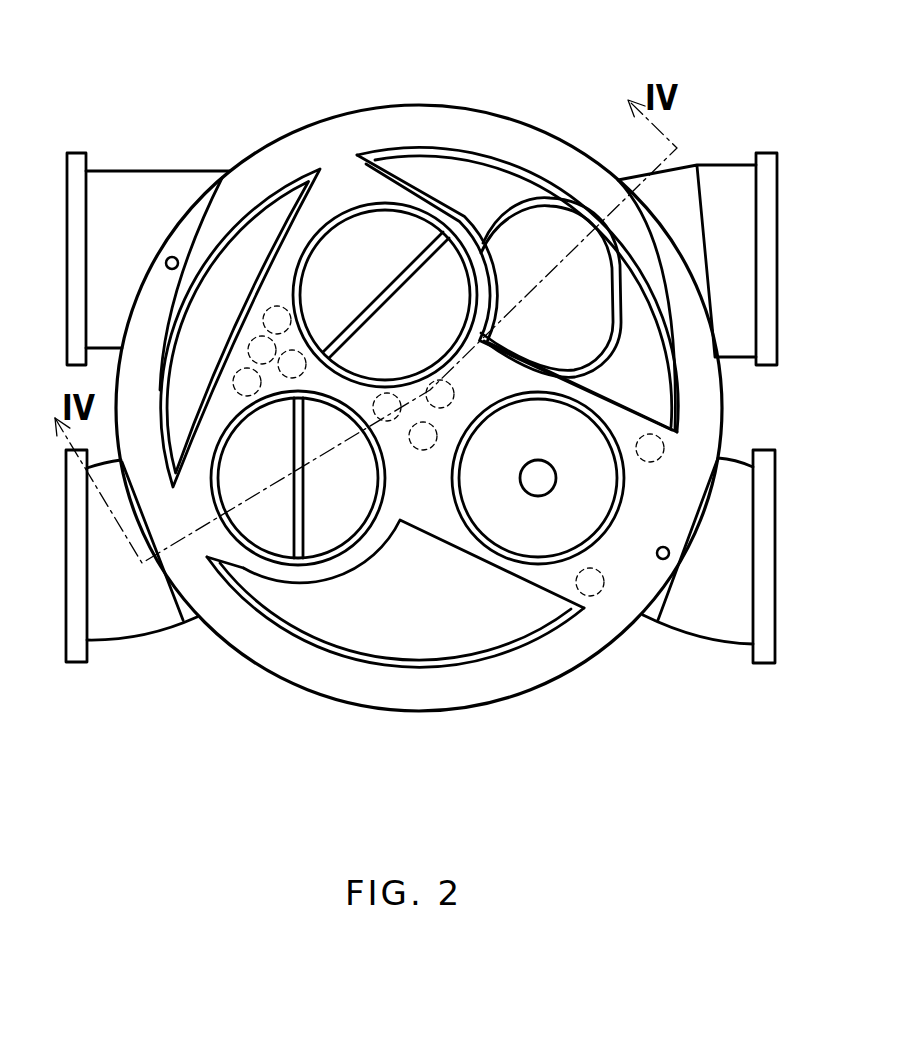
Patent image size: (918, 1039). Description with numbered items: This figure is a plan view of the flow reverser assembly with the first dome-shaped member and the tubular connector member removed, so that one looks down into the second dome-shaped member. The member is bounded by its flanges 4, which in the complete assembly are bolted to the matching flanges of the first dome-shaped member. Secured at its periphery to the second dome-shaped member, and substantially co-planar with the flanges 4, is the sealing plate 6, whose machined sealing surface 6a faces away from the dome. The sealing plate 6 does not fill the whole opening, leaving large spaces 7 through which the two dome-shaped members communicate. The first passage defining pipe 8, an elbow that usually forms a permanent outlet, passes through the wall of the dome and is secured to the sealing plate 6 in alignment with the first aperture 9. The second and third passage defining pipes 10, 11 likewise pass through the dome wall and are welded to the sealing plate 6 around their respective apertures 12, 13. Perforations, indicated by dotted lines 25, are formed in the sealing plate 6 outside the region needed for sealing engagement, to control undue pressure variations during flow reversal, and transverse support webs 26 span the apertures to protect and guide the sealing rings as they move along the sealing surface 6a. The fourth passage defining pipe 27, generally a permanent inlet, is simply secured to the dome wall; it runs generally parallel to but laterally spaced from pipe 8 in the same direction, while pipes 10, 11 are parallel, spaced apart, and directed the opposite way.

The flanges 4 is at (360, 127).
The sealing plate 6 is at (430, 518).
The sealing surface 6a is at (497, 385).
The large spaces 7 is at (227, 272).
The first passage defining pipe 8 is at (657, 620).
The first aperture 9 is at (617, 442).
The second passage defining pipe 10 is at (124, 618).
The third passage defining pipe 11 is at (123, 195).
The aperture 12 is at (270, 560).
The aperture 13 is at (387, 205).
The perforations 25 is at (252, 341).
The transverse support webs 26 is at (303, 535).
The fourth passage defining pipe 27 is at (575, 238).